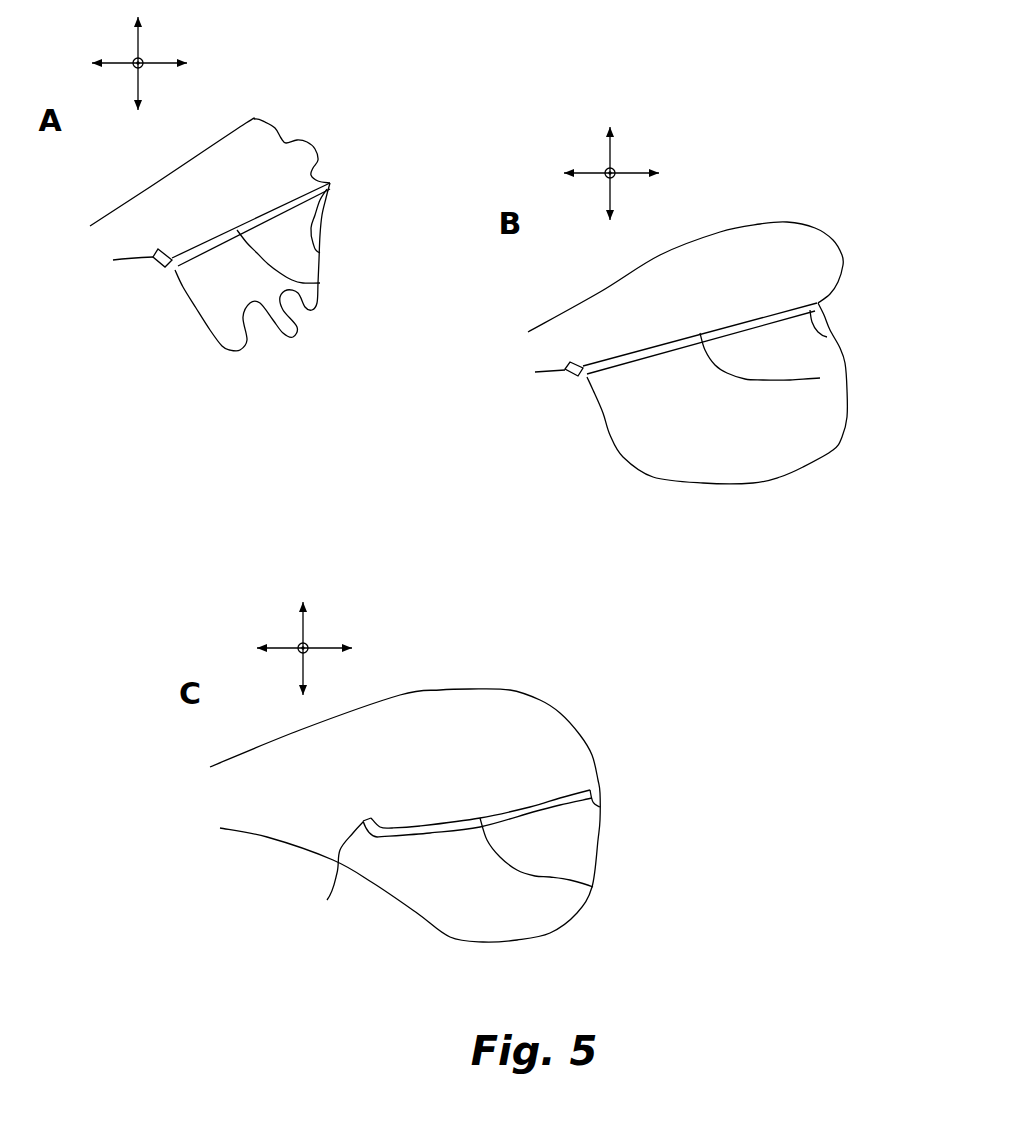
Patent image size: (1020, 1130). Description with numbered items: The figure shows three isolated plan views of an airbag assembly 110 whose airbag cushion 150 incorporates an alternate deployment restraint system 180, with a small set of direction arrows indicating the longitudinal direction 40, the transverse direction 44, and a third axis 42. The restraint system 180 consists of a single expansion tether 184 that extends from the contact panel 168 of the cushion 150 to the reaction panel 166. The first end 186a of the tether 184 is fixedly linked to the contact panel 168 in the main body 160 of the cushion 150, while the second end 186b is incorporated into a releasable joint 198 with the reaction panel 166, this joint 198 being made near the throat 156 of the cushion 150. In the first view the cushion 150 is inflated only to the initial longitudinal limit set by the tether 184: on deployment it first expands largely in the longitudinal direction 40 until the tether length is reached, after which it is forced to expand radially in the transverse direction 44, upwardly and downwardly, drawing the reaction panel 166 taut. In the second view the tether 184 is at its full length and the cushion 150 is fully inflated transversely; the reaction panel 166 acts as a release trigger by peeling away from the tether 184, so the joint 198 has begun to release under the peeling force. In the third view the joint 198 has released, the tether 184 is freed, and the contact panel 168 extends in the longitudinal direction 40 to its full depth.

In FIG. 5A, the longitudinal direction 40 is at (155, 54).
In FIG. 5B, the longitudinal direction 40 is at (627, 164).
In FIG. 5C, the longitudinal direction 40 is at (320, 639).
In FIG. 5A, the transverse axis 42 is at (112, 41).
In FIG. 5B, the transverse axis 42 is at (584, 151).
In FIG. 5C, the transverse axis 42 is at (277, 626).
In FIG. 5A, the transverse direction 44 is at (169, 57).
In FIG. 5B, the transverse direction 44 is at (641, 167).
In FIG. 5C, the transverse direction 44 is at (334, 642).
In FIG. 5A, the airbag assembly 110 is at (322, 110).
In FIG. 5B, the airbag assembly 110 is at (825, 213).
In FIG. 5C, the airbag assembly 110 is at (583, 677).
In FIG. 5A, the airbag cushion 150 is at (345, 228).
In FIG. 5B, the airbag cushion 150 is at (840, 315).
In FIG. 5C, the airbag cushion 150 is at (617, 797).
In FIG. 5A, the throat 156 is at (128, 263).
In FIG. 5B, the throat 156 is at (545, 376).
In FIG. 5C, the throat 156 is at (220, 830).
In FIG. 5A, the main body 160 is at (260, 163).
In FIG. 5B, the main body 160 is at (752, 270).
In FIG. 5C, the main body 160 is at (482, 723).
In FIG. 5A, the reaction panel 166 is at (173, 170).
In FIG. 5B, the reaction panel 166 is at (659, 253).
In FIG. 5C, the reaction panel 166 is at (400, 703).
In FIG. 5A, the contact panel 168 is at (323, 173).
In FIG. 5B, the contact panel 168 is at (845, 260).
In FIG. 5C, the contact panel 168 is at (580, 735).
In FIG. 5A, the deployment restraint system 180 is at (190, 235).
In FIG. 5B, the deployment restraint system 180 is at (622, 330).
In FIG. 5C, the deployment restraint system 180 is at (348, 780).
In FIG. 5A, the expansion tether 184 is at (320, 283).
In FIG. 5B, the expansion tether 184 is at (820, 378).
In FIG. 5C, the expansion tether 184 is at (593, 887).
In FIG. 5A, the first end 186a is at (320, 253).
In FIG. 5B, the first end 186a is at (827, 337).
In FIG. 5C, the first end 186a is at (600, 807).
In FIG. 5A, the second end 186b is at (148, 262).
In FIG. 5B, the second end 186b is at (567, 374).
In FIG. 5C, the second end 186b is at (327, 900).
In FIG. 5A, the releasable joint 198 is at (165, 267).
In FIG. 5B, the releasable joint 198 is at (575, 377).